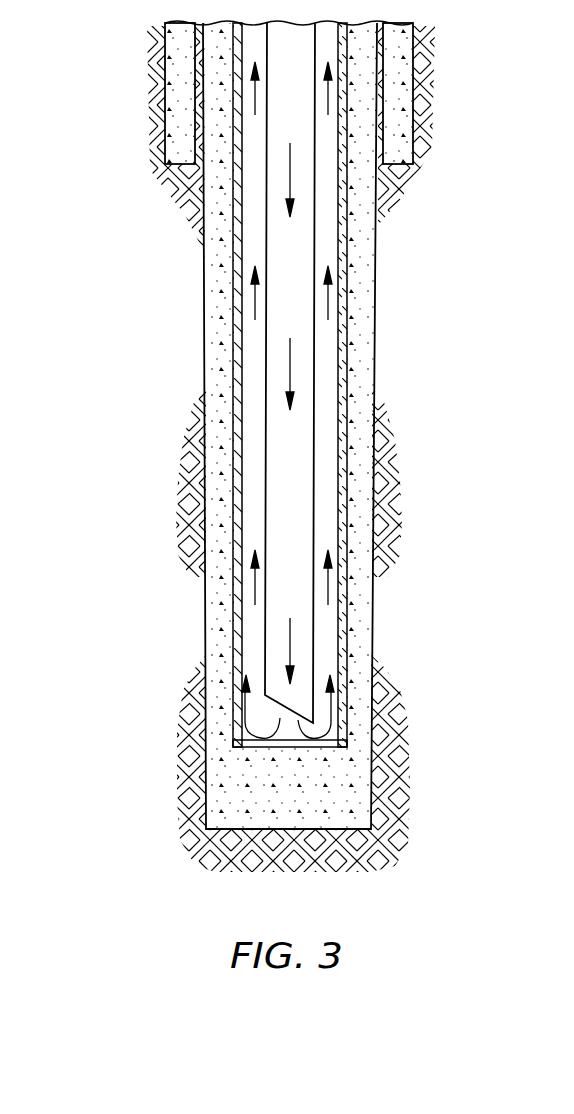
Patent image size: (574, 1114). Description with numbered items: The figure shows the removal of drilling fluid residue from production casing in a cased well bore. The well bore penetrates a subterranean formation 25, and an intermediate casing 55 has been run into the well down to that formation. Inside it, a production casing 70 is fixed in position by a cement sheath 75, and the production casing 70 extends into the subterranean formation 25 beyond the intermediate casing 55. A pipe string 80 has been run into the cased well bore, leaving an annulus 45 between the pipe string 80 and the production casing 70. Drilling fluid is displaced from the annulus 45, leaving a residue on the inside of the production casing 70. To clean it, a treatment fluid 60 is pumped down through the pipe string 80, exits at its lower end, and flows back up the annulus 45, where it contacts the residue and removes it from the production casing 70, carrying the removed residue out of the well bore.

The subterranean formation 25 is at (405, 87).
The intermediate casing 55 is at (386, 145).
The cement sheath 75 is at (392, 117).
The production casing 70 is at (347, 260).
The pipe string 80 is at (313, 331).
The annulus 45 is at (328, 377).
The treatment fluid 60 is at (290, 173).